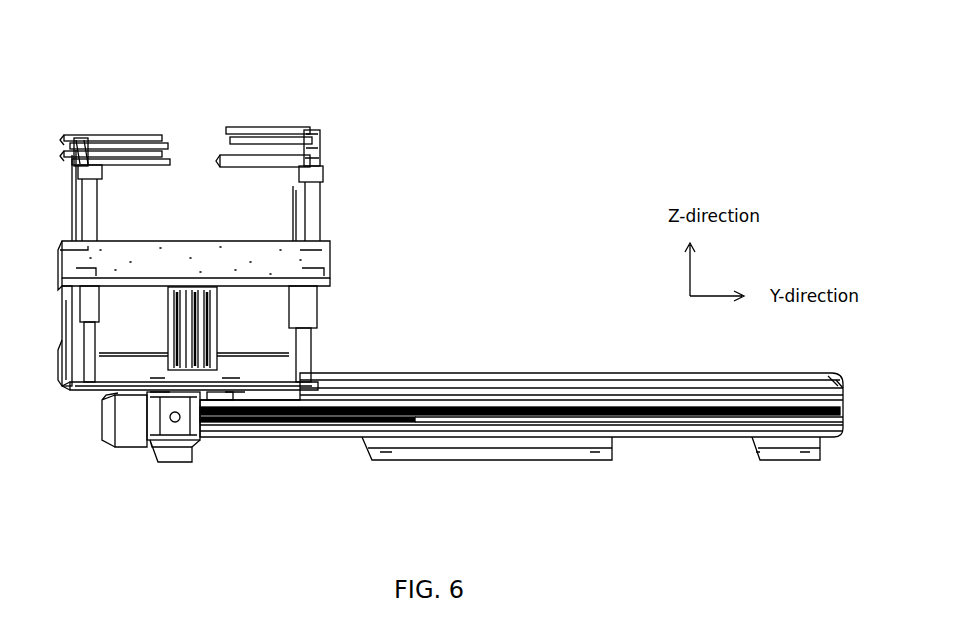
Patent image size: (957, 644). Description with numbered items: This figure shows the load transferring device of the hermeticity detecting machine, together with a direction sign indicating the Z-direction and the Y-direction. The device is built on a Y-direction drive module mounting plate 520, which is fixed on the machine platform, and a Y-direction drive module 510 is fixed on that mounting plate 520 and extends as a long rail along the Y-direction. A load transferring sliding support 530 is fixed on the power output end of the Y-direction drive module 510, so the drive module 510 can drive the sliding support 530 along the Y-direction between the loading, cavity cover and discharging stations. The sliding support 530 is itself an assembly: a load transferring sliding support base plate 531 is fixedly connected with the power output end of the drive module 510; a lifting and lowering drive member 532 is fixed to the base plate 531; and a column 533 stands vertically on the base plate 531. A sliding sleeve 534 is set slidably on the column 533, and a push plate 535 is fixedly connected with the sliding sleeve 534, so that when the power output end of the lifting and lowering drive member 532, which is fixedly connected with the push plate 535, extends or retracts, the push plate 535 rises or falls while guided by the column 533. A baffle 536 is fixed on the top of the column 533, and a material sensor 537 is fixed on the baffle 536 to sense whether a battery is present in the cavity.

The Y-direction drive module 510 is at (635, 378).
The Y-direction drive module mounting plate 520 is at (820, 456).
The load transferring sliding support 530 is at (432, 131).
The load transferring sliding support base plate 531 is at (278, 373).
The lifting and lowering drive member 532 is at (270, 352).
The column 533 is at (320, 252).
The sliding sleeve 534 is at (317, 308).
The push plate 535 is at (268, 241).
The baffle 536 is at (322, 177).
The material sensor 537 is at (320, 130).